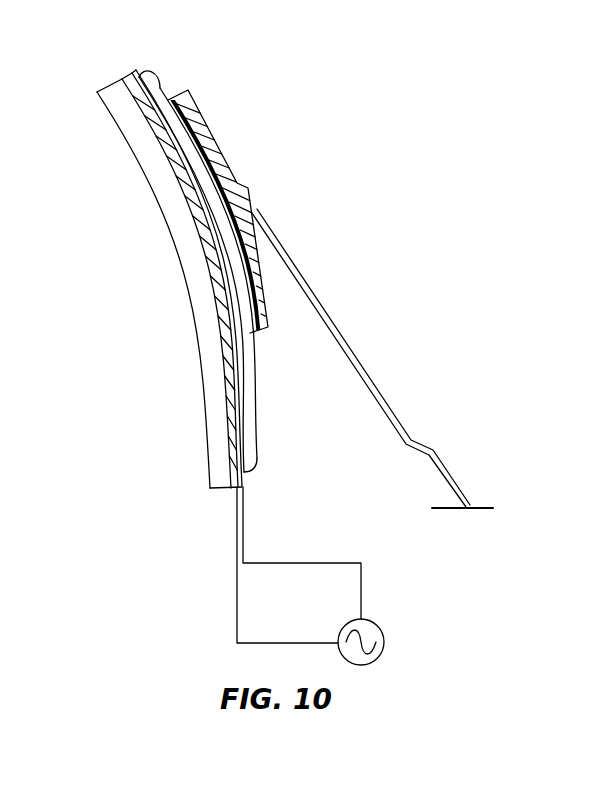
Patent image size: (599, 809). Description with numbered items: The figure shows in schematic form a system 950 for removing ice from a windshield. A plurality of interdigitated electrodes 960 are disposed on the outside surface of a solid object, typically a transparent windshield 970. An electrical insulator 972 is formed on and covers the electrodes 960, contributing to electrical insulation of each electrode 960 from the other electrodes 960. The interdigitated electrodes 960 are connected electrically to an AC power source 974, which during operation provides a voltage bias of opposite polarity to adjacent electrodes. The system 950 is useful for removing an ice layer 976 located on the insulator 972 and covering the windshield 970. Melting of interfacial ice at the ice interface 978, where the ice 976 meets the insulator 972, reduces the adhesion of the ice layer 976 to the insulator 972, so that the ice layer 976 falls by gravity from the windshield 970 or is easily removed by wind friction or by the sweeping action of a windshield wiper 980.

The system 950 is at (313, 67).
The interdigitated electrodes 960 is at (123, 78).
The windshield 970 is at (168, 203).
The electrical insulator 972 is at (247, 479).
The AC power source 974 is at (384, 622).
The ice layer 976 is at (256, 387).
The ice interface 978 is at (139, 72).
The windshield wiper 980 is at (215, 135).